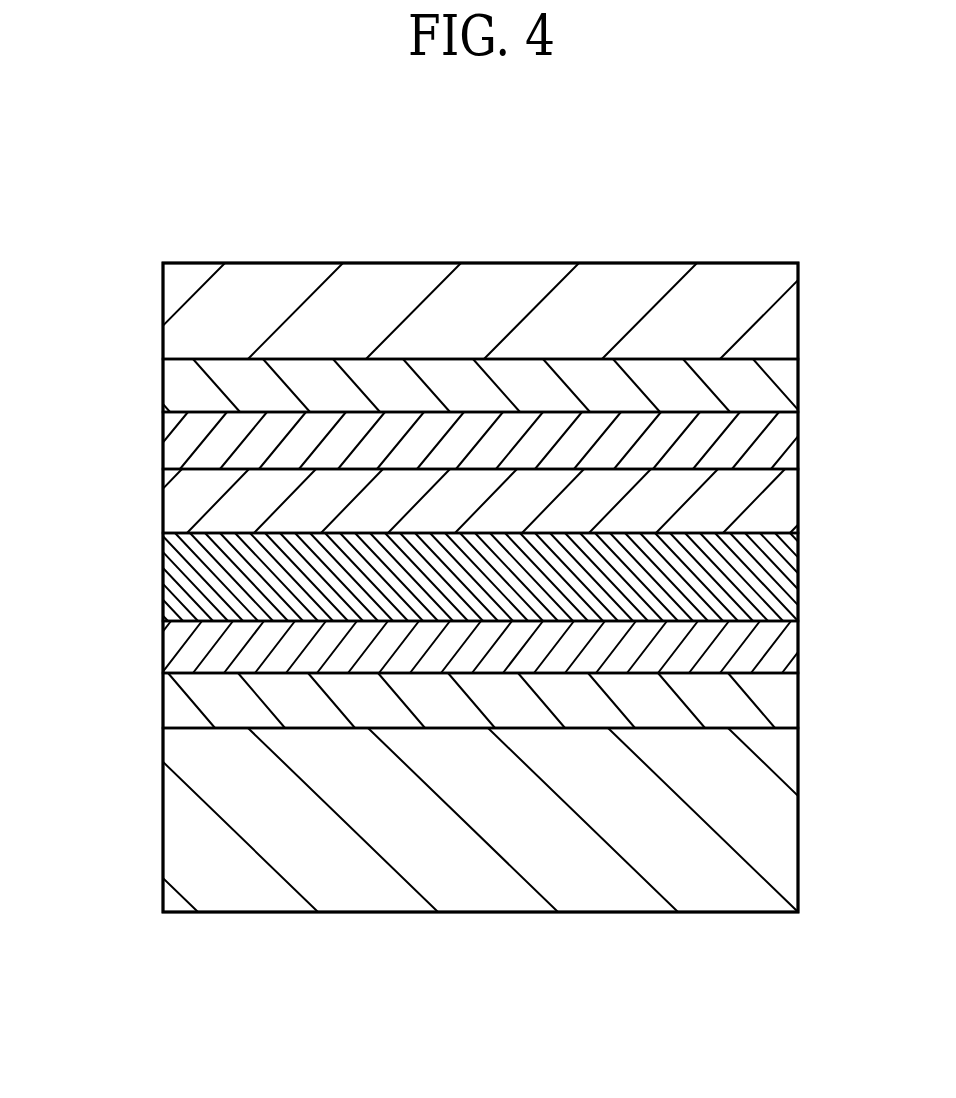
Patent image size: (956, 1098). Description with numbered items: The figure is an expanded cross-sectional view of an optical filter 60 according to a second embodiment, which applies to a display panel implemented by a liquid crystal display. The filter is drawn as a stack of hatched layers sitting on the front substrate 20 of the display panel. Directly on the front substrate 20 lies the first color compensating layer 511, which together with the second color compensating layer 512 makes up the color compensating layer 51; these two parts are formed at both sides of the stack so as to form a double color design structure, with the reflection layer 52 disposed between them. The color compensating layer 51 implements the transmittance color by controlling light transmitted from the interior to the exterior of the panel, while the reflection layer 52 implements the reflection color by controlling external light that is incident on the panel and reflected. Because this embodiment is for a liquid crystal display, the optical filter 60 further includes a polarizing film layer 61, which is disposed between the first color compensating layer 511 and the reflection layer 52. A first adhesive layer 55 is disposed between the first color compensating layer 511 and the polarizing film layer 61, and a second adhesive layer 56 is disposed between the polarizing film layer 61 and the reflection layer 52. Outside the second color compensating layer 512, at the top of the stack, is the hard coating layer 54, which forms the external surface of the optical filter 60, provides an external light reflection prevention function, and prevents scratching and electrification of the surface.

The optical filter 60 is at (778, 216).
The hard coating layer 54 is at (773, 316).
The color compensating layer 51 is at (80, 713).
The second color compensating layer 512 is at (187, 385).
The reflection layer 52 is at (772, 440).
The second adhesive layer 56 is at (778, 502).
The polarizing film layer 61 is at (775, 573).
The first adhesive layer 55 is at (772, 650).
The first color compensating layer 511 is at (187, 702).
The front substrate 20 is at (773, 815).